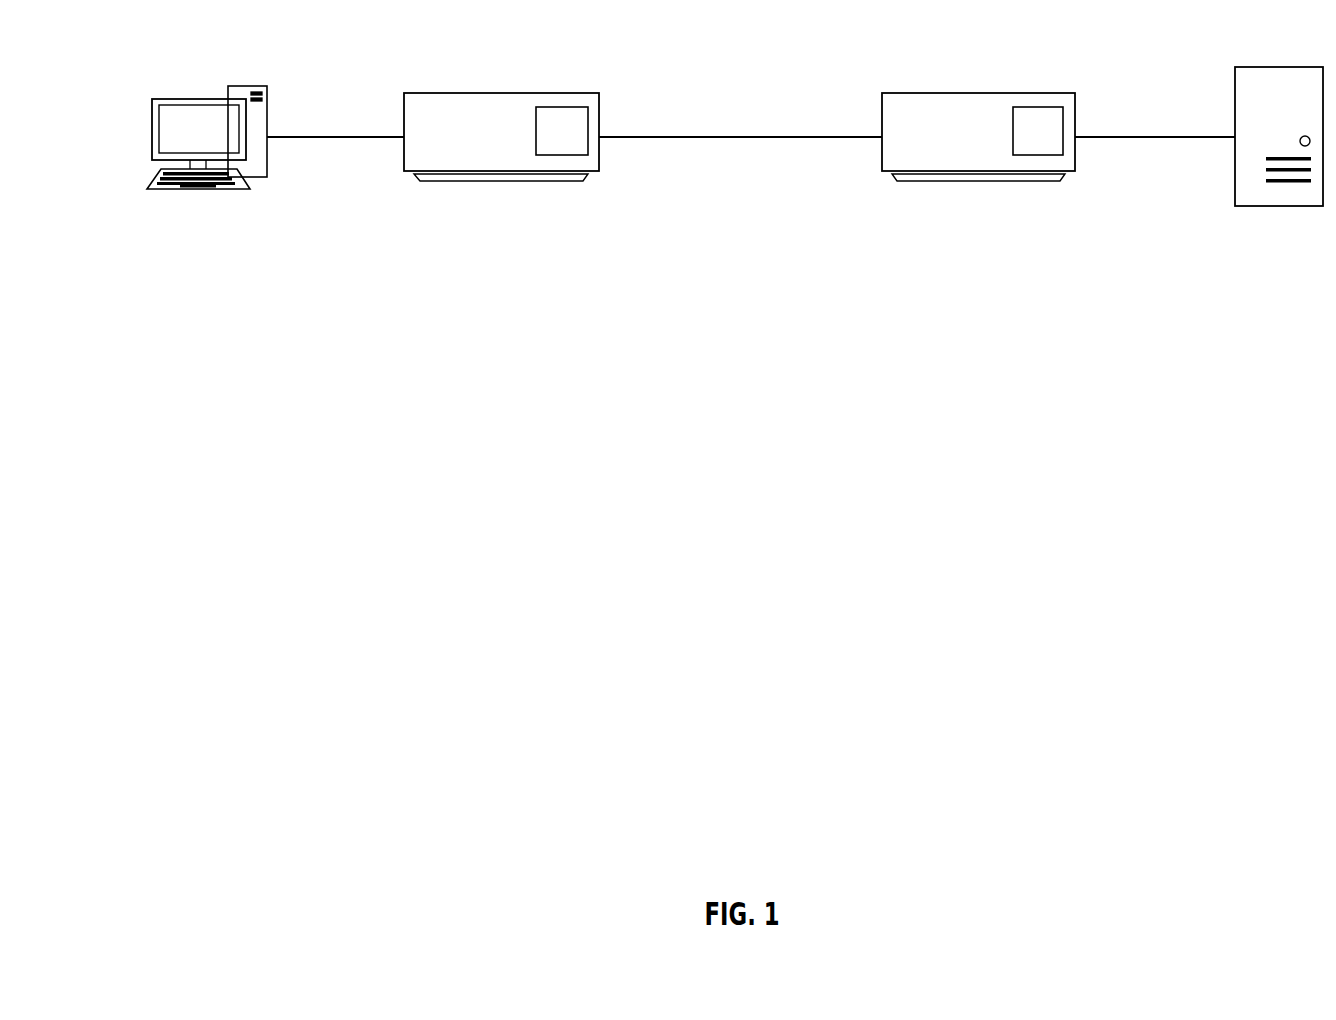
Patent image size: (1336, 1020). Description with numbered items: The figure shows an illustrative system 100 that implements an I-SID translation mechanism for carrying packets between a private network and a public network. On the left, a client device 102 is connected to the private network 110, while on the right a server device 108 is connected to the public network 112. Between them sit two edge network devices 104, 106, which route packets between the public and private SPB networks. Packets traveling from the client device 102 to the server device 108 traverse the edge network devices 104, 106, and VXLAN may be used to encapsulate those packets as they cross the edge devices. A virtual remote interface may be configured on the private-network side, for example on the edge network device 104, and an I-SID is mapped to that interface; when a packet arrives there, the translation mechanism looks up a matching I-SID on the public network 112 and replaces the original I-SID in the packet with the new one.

The system 100 is at (683, 14).
The client device 102 is at (202, 203).
The edge network device 104 is at (505, 197).
The edge network device 106 is at (982, 197).
The server device 108 is at (1277, 220).
The private network 110 is at (358, 137).
The public network 112 is at (1178, 137).